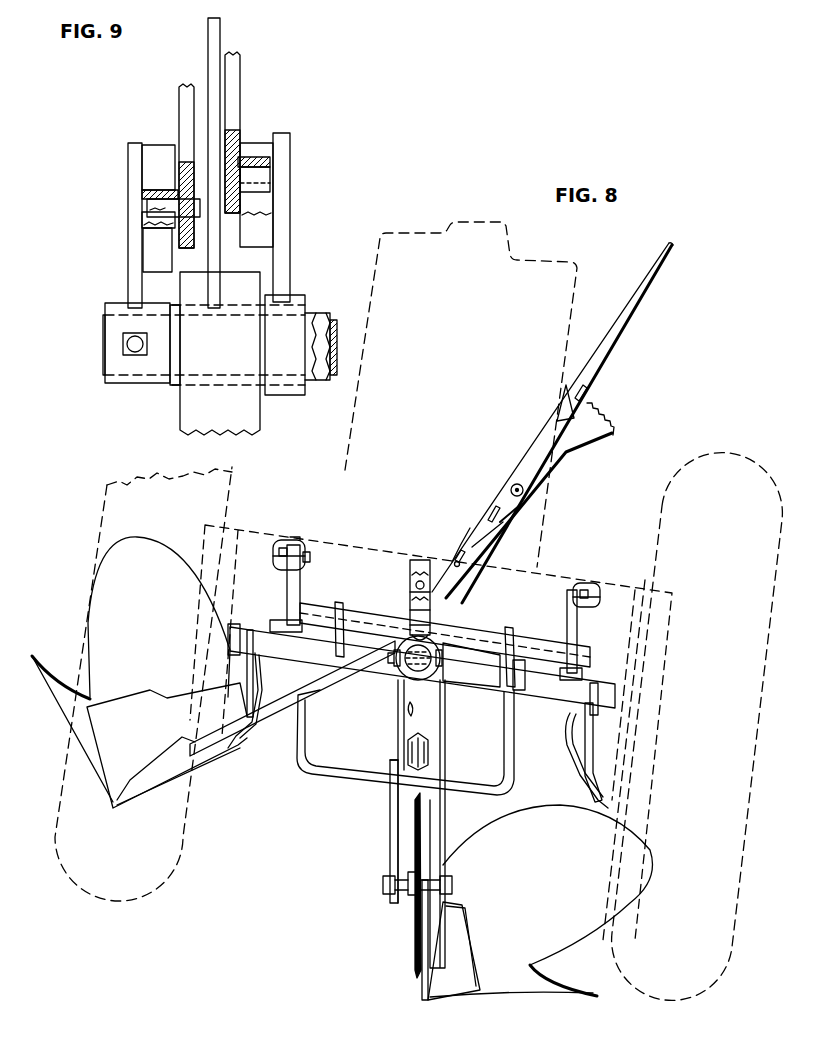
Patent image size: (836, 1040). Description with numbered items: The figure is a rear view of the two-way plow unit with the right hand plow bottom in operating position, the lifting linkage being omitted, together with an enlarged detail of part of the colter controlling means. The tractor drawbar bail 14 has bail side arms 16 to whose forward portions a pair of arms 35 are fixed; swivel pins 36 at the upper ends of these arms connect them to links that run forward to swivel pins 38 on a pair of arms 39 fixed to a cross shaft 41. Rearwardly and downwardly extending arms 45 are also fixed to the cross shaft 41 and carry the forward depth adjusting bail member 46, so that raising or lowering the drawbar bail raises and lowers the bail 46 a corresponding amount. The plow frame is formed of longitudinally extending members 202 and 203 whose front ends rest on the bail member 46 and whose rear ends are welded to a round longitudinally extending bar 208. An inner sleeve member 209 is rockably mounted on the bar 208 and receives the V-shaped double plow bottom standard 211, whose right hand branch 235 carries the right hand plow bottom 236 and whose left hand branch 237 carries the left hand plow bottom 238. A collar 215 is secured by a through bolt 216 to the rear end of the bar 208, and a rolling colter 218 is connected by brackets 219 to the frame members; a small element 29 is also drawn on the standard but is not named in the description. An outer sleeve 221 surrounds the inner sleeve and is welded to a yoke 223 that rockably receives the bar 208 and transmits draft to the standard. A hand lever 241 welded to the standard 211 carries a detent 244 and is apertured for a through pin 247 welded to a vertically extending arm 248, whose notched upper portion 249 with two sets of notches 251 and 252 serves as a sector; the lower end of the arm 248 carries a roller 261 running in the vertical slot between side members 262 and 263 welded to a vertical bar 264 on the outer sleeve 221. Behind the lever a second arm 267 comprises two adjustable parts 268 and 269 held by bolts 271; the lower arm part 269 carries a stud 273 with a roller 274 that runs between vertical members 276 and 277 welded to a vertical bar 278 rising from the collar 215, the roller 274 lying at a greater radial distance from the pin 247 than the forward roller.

In FIG. 8, the tractor drawbar bail 14 is at (611, 679).
In FIG. 8, the bail side arms 16 is at (244, 693).
In FIG. 8, the tab 29 is at (404, 712).
In FIG. 8, the arms 35 is at (253, 668).
In FIG. 8, the swivel pins 36 is at (275, 622).
In FIG. 8, the swivel pins 38 is at (290, 543).
In FIG. 8, the arms 39 is at (300, 585).
In FIG. 8, the cross shaft 41 is at (372, 612).
In FIG. 8, the arms 45 is at (340, 602).
In FIG. 8, the bail member 46 is at (325, 778).
In FIG. 8, the longitudinally extending member 202 is at (402, 772).
In FIG. 8, the longitudinally extending member 203 is at (428, 753).
In FIG. 9, the longitudinally extending bar 208 is at (331, 366).
In FIG. 8, the longitudinally extending bar 208 is at (425, 665).
In FIG. 9, the inner sleeve member 209 is at (313, 315).
In FIG. 9, the double plow bottom standard 211 is at (176, 416).
In FIG. 8, the double plow bottom standard 211 is at (300, 695).
In FIG. 9, the collar 215 is at (112, 323).
In FIG. 8, the collar 215 is at (402, 668).
In FIG. 9, the through bolt 216 is at (130, 343).
In FIG. 8, the through bolt 216 is at (396, 661).
In FIG. 8, the rolling colter 218 is at (415, 947).
In FIG. 8, the brackets 219 is at (393, 838).
In FIG. 9, the outer sleeve 221 is at (297, 298).
In FIG. 8, the yoke 223 is at (485, 655).
In FIG. 8, the right hand branch 235 is at (440, 816).
In FIG. 8, the right hand plow bottom 236 is at (507, 982).
In FIG. 8, the left hand branch 237 is at (183, 758).
In FIG. 8, the left hand plow bottom 238 is at (100, 625).
In FIG. 9, the hand lever 241 is at (213, 33).
In FIG. 8, the hand lever 241 is at (547, 447).
In FIG. 8, the detent 244 is at (586, 392).
In FIG. 8, the through pin 247 is at (511, 485).
In FIG. 9, the vertically extending arm 248 is at (233, 87).
In FIG. 8, the upper portion 249 is at (592, 434).
In FIG. 8, the notches 251 is at (571, 384).
In FIG. 8, the notches 252 is at (617, 423).
In FIG. 9, the roller 261 is at (258, 180).
In FIG. 9, the side member 262 is at (267, 233).
In FIG. 9, the side member 263 is at (265, 203).
In FIG. 9, the vertical bar 264 is at (283, 147).
In FIG. 8, the second arm 267 is at (464, 534).
In FIG. 8, the arm part 268 is at (521, 505).
In FIG. 9, the lower arm part 269 is at (185, 105).
In FIG. 8, the lower arm part 269 is at (455, 555).
In FIG. 8, the bolts 271 is at (474, 548).
In FIG. 9, the stud 273 is at (152, 207).
In FIG. 9, the roller 274 is at (157, 222).
In FIG. 8, the roller 274 is at (410, 600).
In FIG. 9, the vertical member 276 is at (155, 173).
In FIG. 8, the vertical member 276 is at (413, 591).
In FIG. 9, the vertical member 277 is at (150, 257).
In FIG. 8, the vertical member 277 is at (422, 587).
In FIG. 8, the vertical bar 278 is at (412, 610).